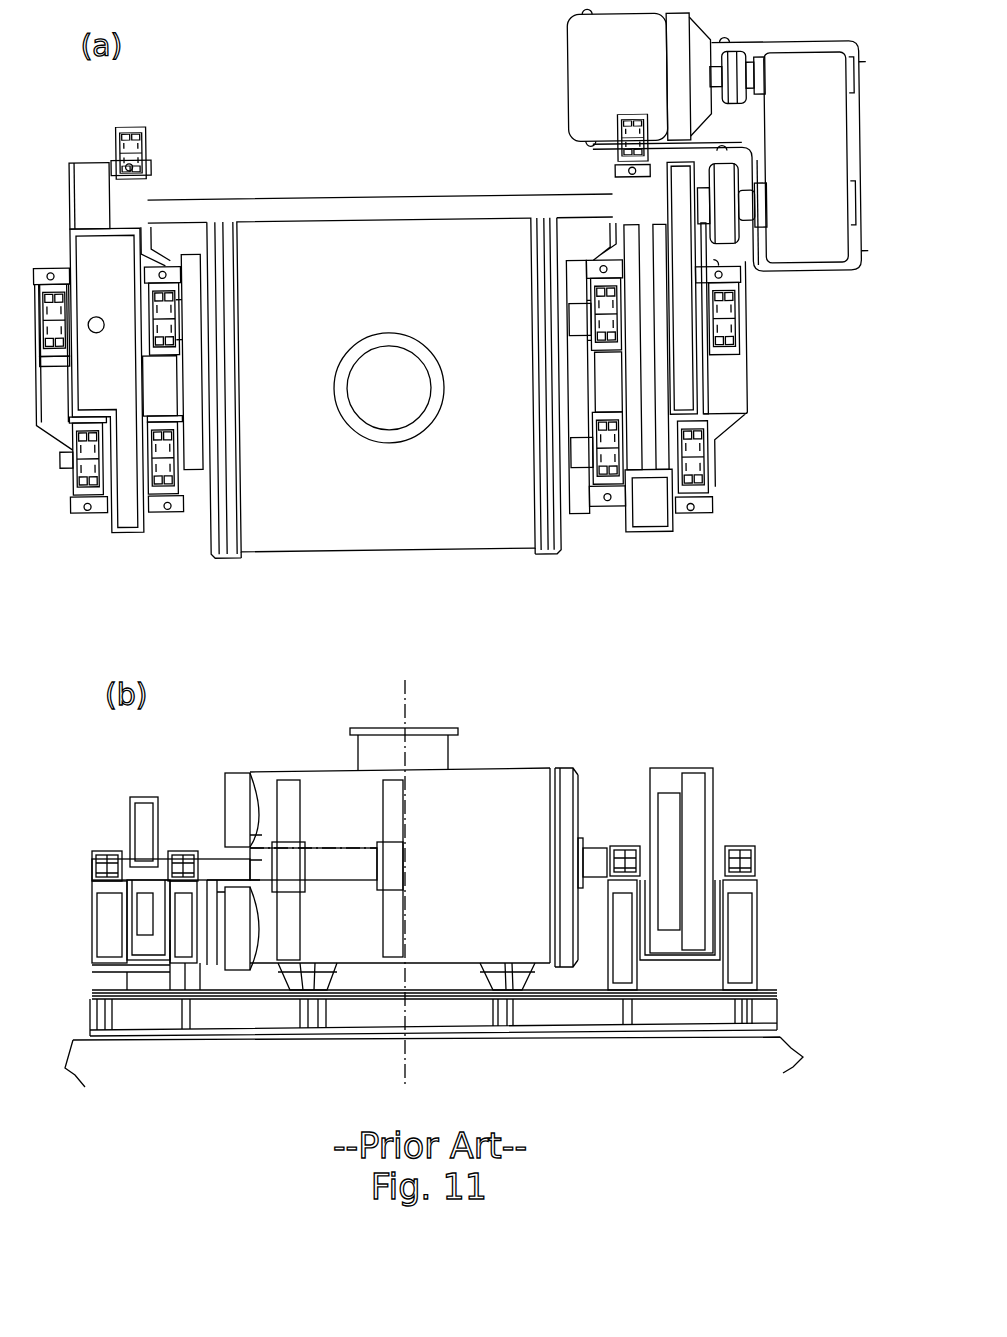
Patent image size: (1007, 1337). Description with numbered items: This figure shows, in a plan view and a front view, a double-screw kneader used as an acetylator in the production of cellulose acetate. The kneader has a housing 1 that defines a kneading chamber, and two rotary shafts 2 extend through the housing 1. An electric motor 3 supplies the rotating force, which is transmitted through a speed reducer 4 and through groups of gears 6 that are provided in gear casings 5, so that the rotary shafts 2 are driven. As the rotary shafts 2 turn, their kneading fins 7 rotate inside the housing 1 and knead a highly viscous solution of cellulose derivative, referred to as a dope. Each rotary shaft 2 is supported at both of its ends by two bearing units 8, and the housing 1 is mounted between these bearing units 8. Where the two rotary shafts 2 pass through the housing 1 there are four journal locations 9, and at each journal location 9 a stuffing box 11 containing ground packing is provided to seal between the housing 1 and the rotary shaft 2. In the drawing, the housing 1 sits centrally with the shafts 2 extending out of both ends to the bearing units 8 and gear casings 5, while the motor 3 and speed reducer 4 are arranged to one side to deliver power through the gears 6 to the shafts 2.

The housing 1 is at (360, 232).
The rotary shaft 2 is at (188, 297).
The electric motor 3 is at (577, 66).
The speed reducer 4 is at (790, 253).
The gear casing 5 is at (125, 531).
The group of gears 6 is at (690, 379).
The kneading fin 7 is at (295, 800).
The bearing unit 8 is at (55, 284).
The journal location 9 is at (203, 355).
The stuffing box 11 is at (218, 890).